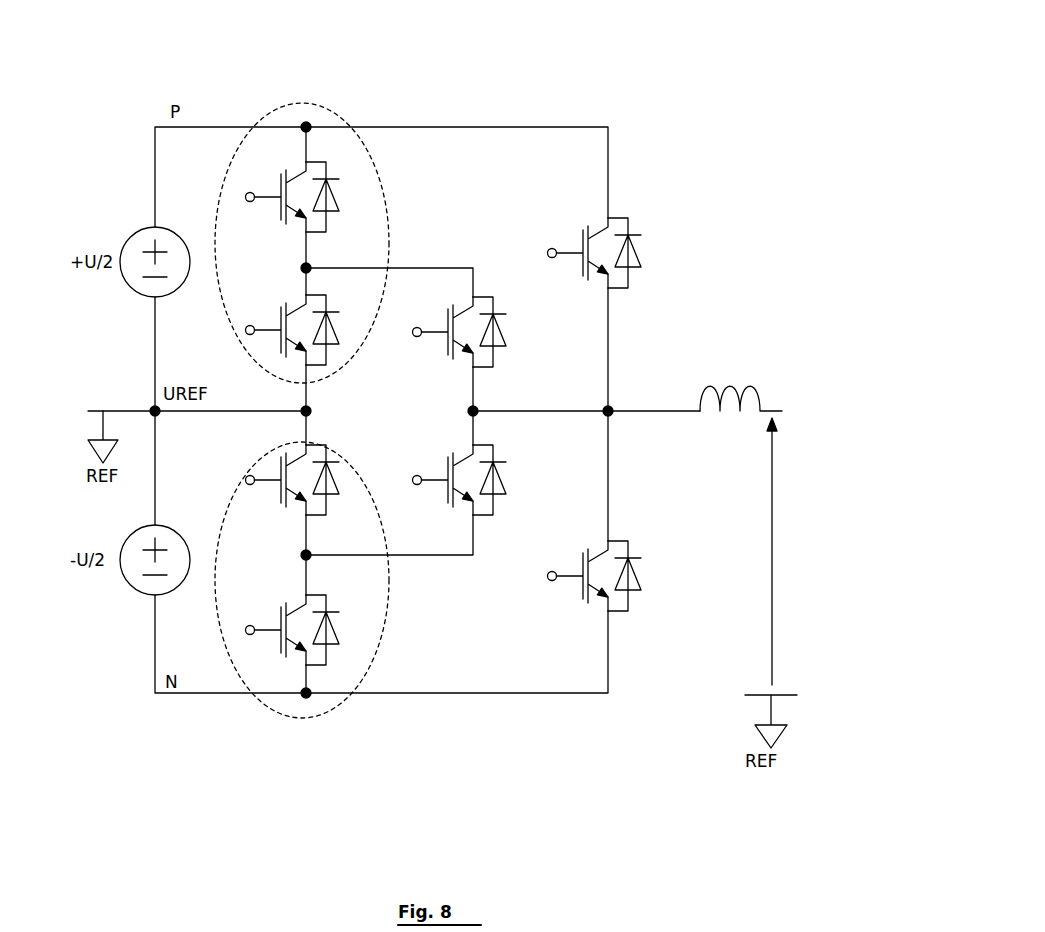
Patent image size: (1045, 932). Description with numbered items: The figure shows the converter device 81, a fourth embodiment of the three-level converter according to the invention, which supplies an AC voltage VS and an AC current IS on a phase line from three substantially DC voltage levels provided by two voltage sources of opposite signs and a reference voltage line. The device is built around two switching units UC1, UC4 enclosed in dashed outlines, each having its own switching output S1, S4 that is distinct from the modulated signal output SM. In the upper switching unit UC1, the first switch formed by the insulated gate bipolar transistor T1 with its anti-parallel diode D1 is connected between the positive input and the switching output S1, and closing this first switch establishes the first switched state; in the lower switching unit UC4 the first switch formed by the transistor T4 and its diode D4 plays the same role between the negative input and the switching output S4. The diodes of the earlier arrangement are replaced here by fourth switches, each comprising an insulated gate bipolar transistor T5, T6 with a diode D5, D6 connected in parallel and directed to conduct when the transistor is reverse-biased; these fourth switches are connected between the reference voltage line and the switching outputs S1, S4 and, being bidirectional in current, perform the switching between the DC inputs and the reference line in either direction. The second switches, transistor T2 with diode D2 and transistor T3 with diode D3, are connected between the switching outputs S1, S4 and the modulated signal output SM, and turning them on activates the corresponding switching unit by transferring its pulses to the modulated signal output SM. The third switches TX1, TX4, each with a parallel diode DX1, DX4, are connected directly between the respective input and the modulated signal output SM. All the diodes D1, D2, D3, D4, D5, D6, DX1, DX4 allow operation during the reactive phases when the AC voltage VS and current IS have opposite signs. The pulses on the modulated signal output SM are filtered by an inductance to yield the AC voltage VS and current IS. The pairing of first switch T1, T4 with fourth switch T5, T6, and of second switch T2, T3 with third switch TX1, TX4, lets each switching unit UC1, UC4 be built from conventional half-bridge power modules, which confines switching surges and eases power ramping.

The converter device 81 is at (642, 86).
The switching unit UC1 is at (330, 110).
The switching unit UC4 is at (362, 683).
The switching output S1 is at (306, 267).
The switching output S4 is at (306, 555).
The modulated signal output SM is at (610, 409).
The transistor of the first switch T1 is at (276, 197).
The diode D1 is at (337, 197).
The transistor of the fourth switch T5 is at (276, 330).
The diode D5 is at (337, 330).
The transistor of the fourth switch T6 is at (276, 480).
The diode D6 is at (337, 480).
The transistor of the first switch T4 is at (276, 630).
The diode D4 is at (337, 630).
The transistor of the second switch T2 is at (443, 332).
The diode D2 is at (502, 332).
The transistor of the second switch T3 is at (443, 480).
The diode D3 is at (502, 480).
The third switch TX1 is at (572, 253).
The diode DX1 is at (644, 253).
The third switch TX4 is at (572, 576).
The diode DX4 is at (644, 576).
The AC current IS is at (750, 377).
The AC voltage VS is at (782, 551).